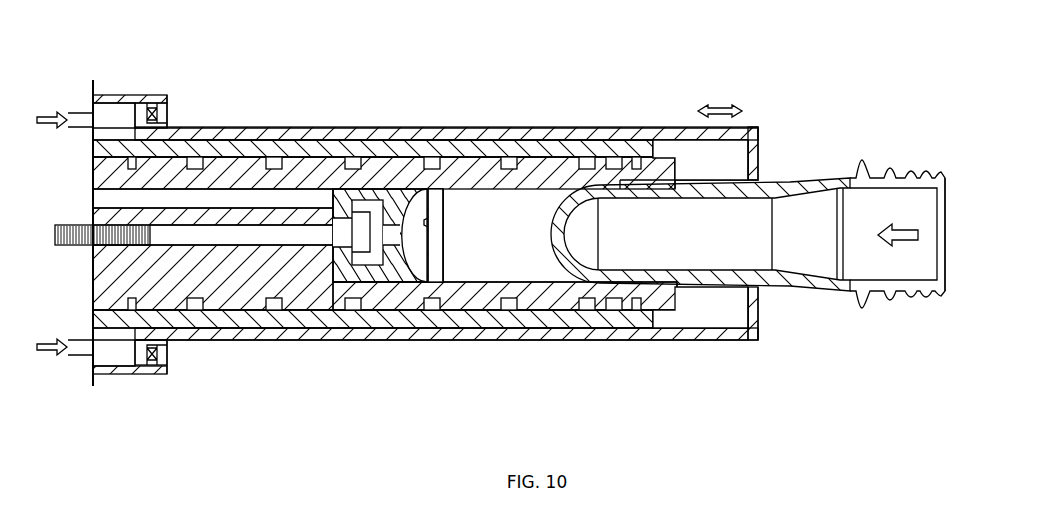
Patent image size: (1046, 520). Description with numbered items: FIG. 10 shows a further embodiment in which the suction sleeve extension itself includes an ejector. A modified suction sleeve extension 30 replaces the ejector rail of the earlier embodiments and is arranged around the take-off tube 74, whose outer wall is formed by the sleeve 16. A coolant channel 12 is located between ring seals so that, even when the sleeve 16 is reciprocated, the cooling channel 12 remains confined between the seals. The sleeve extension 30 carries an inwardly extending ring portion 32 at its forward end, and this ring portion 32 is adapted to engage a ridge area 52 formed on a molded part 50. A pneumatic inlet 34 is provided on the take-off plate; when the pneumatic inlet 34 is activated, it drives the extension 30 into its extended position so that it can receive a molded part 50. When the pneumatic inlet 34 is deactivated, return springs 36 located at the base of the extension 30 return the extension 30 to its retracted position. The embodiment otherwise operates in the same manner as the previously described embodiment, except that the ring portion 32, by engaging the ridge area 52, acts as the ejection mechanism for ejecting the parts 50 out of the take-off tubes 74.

The coolant channel 12 is at (433, 310).
The sleeve 16 is at (323, 148).
The suction sleeve extension 30 is at (498, 127).
The ring portion 32 is at (760, 157).
The pneumatic inlet 34 is at (80, 116).
The return springs 36 is at (163, 113).
The molded part 50 is at (717, 273).
The ridge area 52 is at (853, 300).
The take-off tube 74 is at (318, 293).